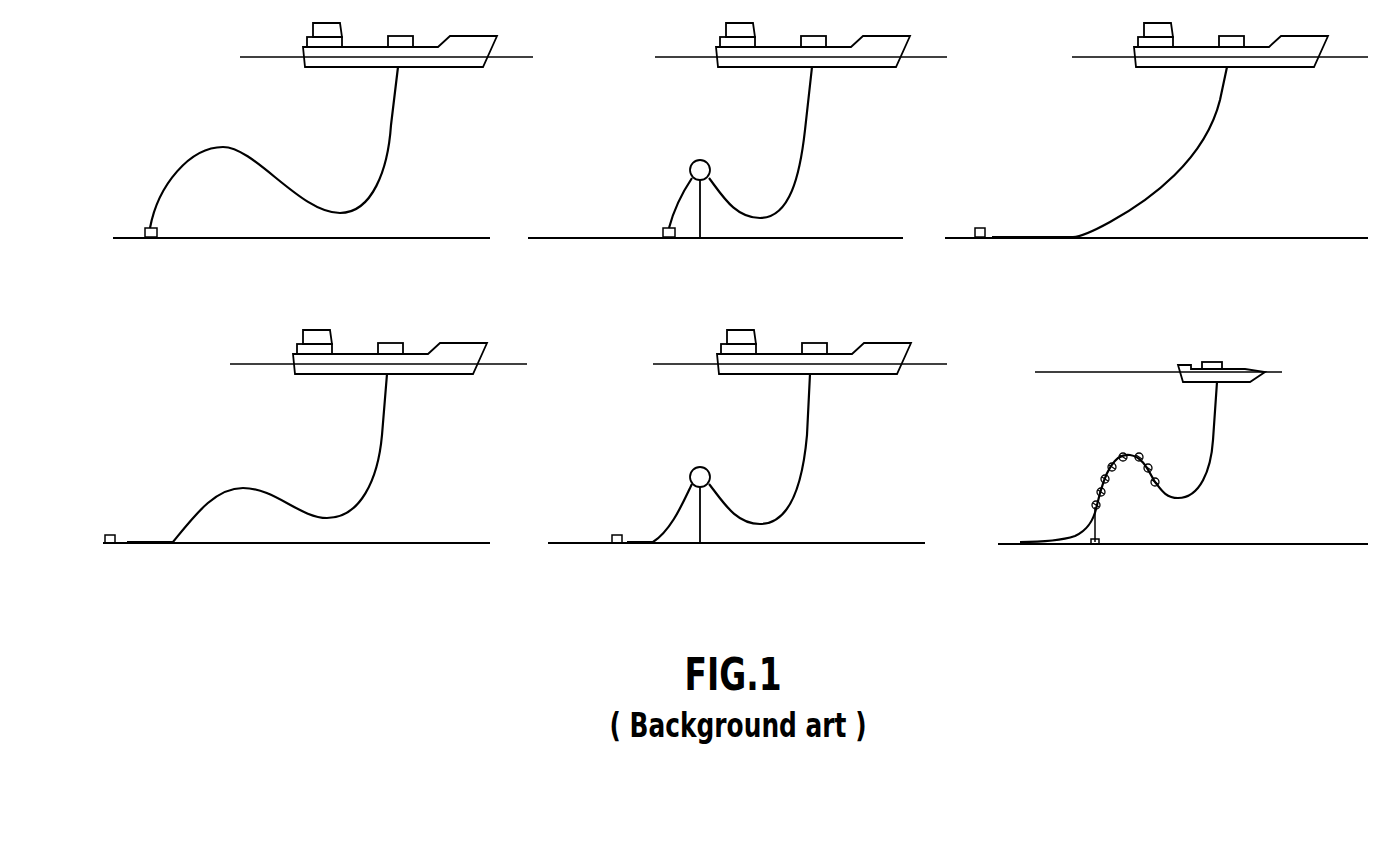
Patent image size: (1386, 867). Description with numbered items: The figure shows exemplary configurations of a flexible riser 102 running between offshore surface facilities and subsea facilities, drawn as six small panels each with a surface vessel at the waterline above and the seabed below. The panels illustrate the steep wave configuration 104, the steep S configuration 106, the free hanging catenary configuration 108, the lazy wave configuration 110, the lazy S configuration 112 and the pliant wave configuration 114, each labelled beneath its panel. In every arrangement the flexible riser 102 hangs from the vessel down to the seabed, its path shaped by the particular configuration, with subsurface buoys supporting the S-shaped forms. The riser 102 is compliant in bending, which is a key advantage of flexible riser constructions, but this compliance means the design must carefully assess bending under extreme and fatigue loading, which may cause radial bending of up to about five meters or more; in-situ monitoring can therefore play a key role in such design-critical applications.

The flexible riser 102 is at (393, 128).
The steep wave configuration 104 is at (304, 302).
The steep S configuration 106 is at (703, 302).
The free hanging catenary configuration 108 is at (1133, 302).
The lazy wave configuration 110 is at (303, 608).
The lazy S configuration 112 is at (713, 608).
The pliant wave configuration 114 is at (1172, 608).